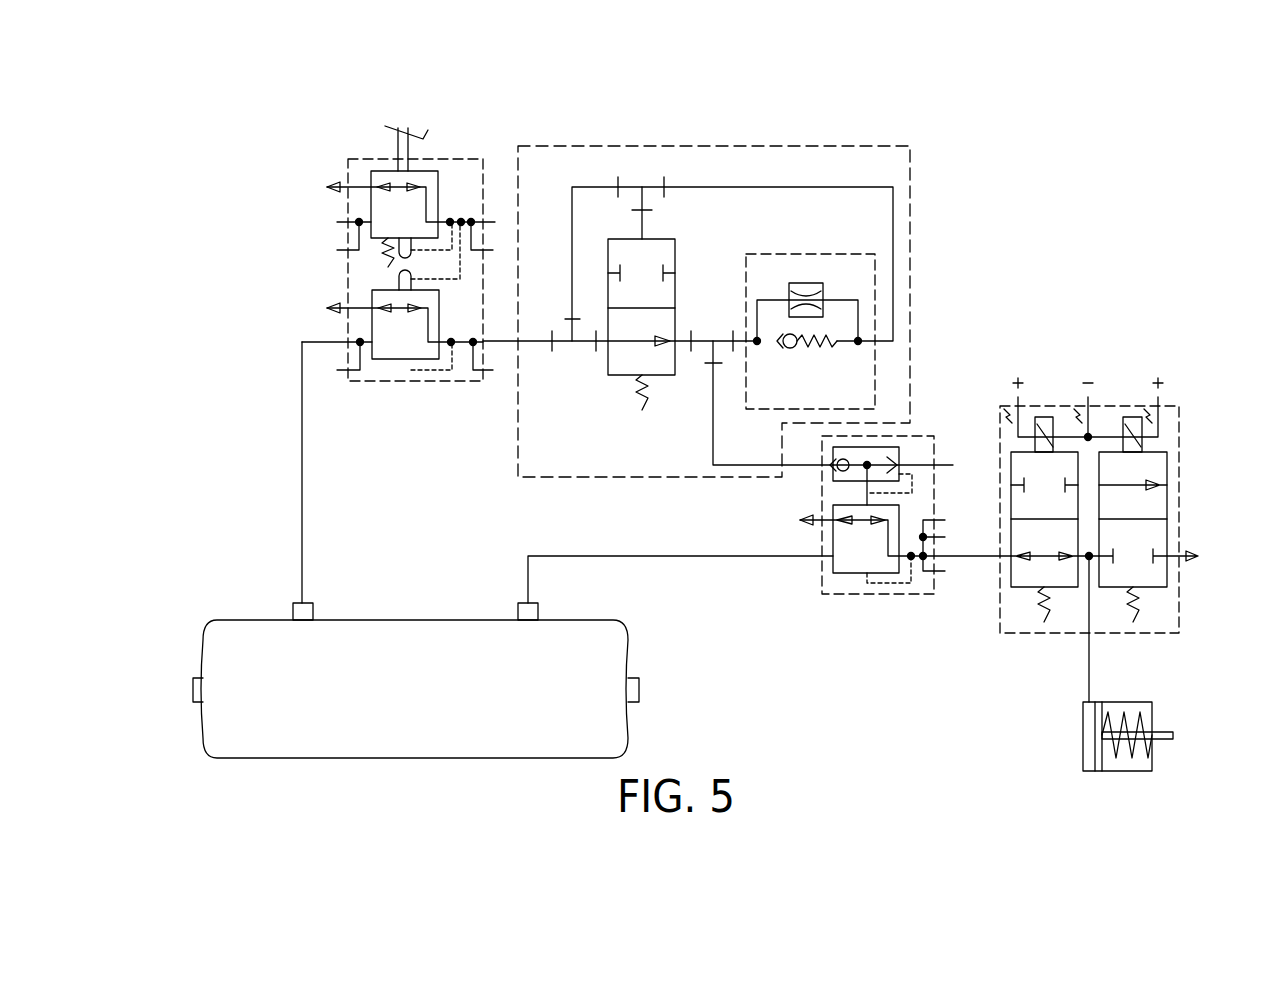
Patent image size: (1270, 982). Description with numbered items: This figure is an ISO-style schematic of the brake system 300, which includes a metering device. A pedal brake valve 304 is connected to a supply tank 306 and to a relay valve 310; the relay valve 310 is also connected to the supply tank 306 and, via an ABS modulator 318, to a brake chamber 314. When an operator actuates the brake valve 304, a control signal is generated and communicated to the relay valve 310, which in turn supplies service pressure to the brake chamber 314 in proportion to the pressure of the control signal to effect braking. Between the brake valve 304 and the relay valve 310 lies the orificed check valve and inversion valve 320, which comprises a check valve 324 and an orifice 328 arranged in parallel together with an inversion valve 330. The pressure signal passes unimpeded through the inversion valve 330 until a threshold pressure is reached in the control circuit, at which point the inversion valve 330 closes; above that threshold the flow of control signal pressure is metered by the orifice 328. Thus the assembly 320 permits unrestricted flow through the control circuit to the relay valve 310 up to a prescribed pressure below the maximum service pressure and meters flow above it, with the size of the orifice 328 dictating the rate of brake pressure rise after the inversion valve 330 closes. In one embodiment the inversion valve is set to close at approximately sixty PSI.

The brake system 300 is at (305, 141).
The brake valve 304 is at (458, 158).
The supply tank 306 is at (628, 653).
The relay valve 310 is at (825, 594).
The brake chamber 314 is at (1152, 708).
The ABS modulator 318 is at (1179, 447).
The orificed check valve and inversion valve 320 is at (893, 146).
The check valve 324 is at (835, 347).
The orifice 328 is at (875, 275).
The inversion valve 330 is at (668, 239).